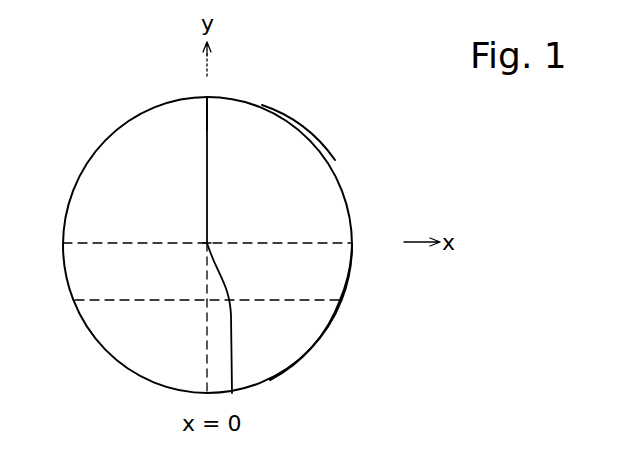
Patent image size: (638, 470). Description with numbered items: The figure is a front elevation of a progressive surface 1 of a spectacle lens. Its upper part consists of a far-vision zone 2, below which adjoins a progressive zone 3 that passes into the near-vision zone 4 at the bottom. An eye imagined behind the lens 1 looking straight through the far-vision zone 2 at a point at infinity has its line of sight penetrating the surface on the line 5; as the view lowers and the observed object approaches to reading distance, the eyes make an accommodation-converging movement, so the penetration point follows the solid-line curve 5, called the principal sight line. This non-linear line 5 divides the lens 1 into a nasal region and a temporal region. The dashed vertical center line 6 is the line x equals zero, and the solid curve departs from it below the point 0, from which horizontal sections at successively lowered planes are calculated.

The progressive surface 1 is at (381, 154).
The far-vision zone 2 is at (298, 151).
The progressive zone 3 is at (342, 282).
The near-vision zone 4 is at (291, 350).
The principal sight line 5 is at (208, 118).
The point 0 is at (208, 242).
The center line 6 is at (207, 355).